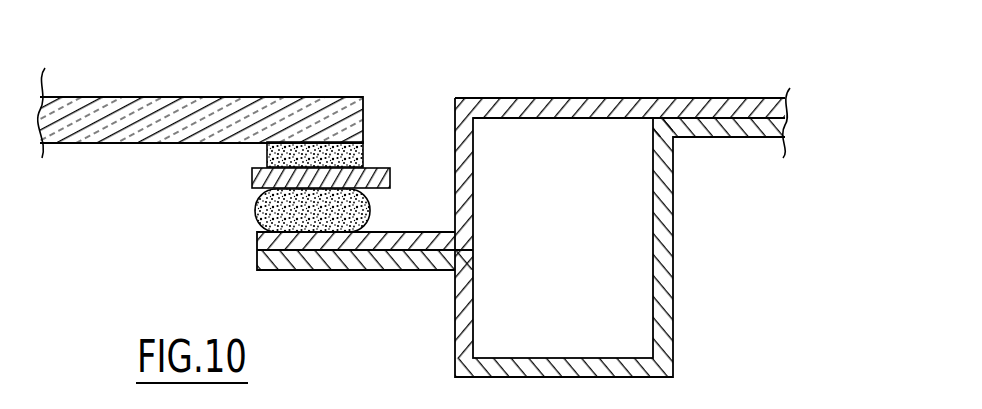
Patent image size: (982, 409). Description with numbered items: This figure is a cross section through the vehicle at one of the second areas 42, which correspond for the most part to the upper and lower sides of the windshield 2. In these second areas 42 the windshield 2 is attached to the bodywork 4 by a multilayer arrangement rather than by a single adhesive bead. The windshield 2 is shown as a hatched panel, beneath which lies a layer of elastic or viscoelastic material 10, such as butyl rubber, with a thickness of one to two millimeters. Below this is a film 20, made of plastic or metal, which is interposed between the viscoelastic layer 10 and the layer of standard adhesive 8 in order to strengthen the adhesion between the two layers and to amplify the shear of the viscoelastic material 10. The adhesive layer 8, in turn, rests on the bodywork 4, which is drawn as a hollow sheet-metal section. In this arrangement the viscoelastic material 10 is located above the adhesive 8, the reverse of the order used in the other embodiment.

The windshield 2 is at (196, 114).
The bodywork 4 is at (708, 104).
The layer of standard adhesive 8 is at (270, 210).
The layer of elastic or viscoelastic material 10 is at (365, 157).
The film 20 is at (252, 182).
The second areas 42 is at (303, 81).